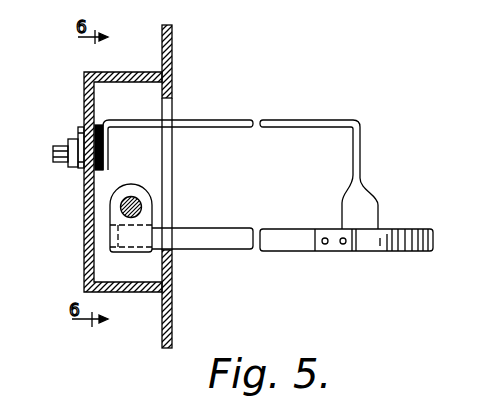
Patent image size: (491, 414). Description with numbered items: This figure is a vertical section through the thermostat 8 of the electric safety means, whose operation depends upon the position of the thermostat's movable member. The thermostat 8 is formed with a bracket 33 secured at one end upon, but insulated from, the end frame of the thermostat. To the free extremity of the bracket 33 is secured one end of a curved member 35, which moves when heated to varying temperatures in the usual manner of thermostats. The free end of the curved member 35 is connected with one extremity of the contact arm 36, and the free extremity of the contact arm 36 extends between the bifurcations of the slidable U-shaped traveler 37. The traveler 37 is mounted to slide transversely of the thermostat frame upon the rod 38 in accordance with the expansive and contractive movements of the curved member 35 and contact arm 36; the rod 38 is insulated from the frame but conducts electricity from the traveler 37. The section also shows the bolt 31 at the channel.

The thermostat 8 is at (126, 72).
The bolt 31 is at (64, 167).
The bracket 33 is at (300, 122).
The curved member 35 is at (408, 252).
The contact arm 36 is at (233, 249).
The traveler 37 is at (138, 187).
The rod 38 is at (141, 204).